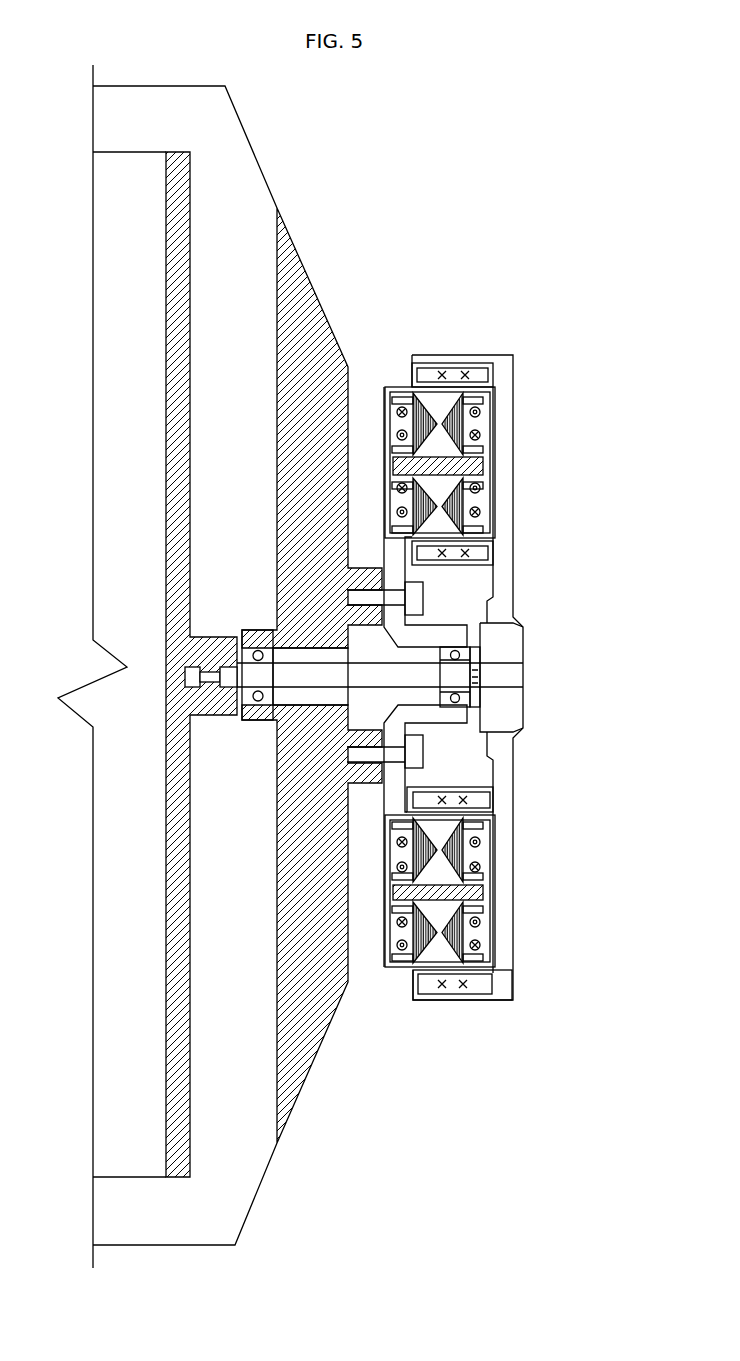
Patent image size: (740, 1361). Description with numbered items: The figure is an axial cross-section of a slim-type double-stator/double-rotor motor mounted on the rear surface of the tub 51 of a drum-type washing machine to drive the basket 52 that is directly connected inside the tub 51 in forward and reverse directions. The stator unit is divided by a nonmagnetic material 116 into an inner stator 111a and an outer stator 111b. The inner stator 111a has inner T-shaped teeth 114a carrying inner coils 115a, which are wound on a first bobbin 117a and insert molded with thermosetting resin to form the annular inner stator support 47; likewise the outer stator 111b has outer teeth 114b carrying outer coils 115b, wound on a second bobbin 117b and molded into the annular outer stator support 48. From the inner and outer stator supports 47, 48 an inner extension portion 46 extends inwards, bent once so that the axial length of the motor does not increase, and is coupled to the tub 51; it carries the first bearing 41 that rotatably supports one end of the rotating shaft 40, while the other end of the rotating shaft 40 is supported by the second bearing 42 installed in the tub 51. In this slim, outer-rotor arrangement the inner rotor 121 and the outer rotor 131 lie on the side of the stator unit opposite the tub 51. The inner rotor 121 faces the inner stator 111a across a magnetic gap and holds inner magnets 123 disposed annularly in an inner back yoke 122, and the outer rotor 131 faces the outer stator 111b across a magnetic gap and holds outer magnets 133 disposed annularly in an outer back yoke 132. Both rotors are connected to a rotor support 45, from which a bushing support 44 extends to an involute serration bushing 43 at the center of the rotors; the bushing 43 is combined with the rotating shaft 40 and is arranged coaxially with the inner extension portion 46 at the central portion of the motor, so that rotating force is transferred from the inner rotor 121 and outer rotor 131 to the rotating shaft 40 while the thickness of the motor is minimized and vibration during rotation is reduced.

The rotating shaft 40 is at (523, 668).
The first bearing 41 is at (440, 698).
The second bearing 42 is at (275, 697).
The bushing 43 is at (483, 658).
The bushing support 44 is at (497, 642).
The rotor support 45 is at (513, 857).
The inner extension portion 46 is at (407, 573).
The inner stator support 47 is at (385, 498).
The outer stator support 48 is at (384, 407).
The tub 51 is at (312, 1060).
The basket 52 is at (190, 1092).
The inner stator 111a is at (527, 516).
The outer stator 111b is at (528, 434).
The inner teeth 114a is at (487, 512).
The outer teeth 114b is at (487, 435).
The inner coils 115a is at (487, 488).
The outer coils 115b is at (487, 410).
The nonmagnetic material 116 is at (485, 890).
The first bobbin 117a is at (485, 532).
The second bobbin 117b is at (485, 452).
The inner rotor 121 is at (530, 794).
The inner back yoke 122 is at (470, 787).
The inner magnets 123 is at (483, 800).
The outer rotor 131 is at (534, 995).
The outer back yoke 132 is at (482, 998).
The outer magnets 133 is at (487, 975).